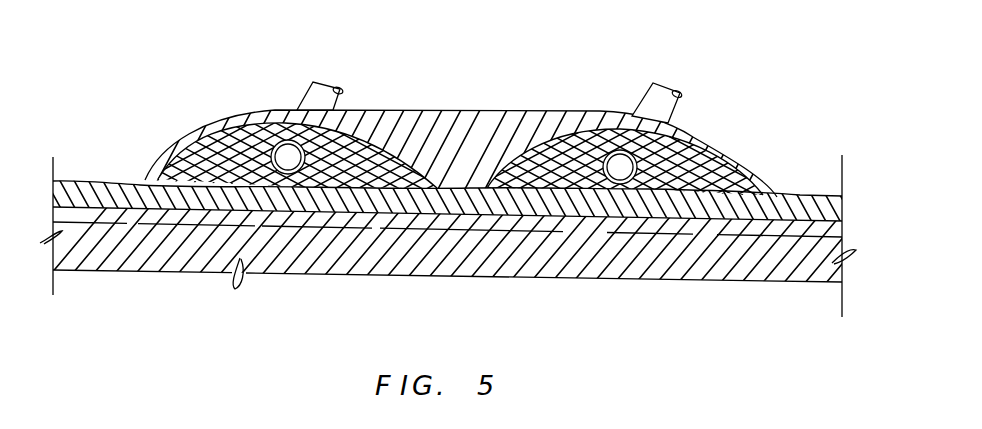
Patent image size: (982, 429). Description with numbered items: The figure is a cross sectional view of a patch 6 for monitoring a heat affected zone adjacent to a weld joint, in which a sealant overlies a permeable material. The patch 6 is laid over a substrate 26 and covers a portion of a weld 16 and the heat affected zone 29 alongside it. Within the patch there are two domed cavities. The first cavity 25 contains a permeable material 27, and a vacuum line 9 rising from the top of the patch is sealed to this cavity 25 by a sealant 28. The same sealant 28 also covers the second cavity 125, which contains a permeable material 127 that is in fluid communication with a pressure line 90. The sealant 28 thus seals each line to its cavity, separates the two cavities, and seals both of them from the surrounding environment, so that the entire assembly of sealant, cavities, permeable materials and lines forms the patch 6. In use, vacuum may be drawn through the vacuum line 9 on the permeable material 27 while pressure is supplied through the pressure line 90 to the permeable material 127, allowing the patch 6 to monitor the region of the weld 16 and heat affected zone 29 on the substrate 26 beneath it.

The patch 6 is at (437, 112).
The vacuum line 9 is at (313, 82).
The weld 16 is at (832, 193).
The cavity 25 is at (240, 148).
The substrate 26 is at (702, 265).
The permeable material 27 is at (210, 167).
The sealant 28 is at (270, 112).
The heat affected zone 29 is at (558, 231).
The pressure line 90 is at (639, 105).
The cavity 125 is at (722, 174).
The permeable material 127 is at (673, 158).